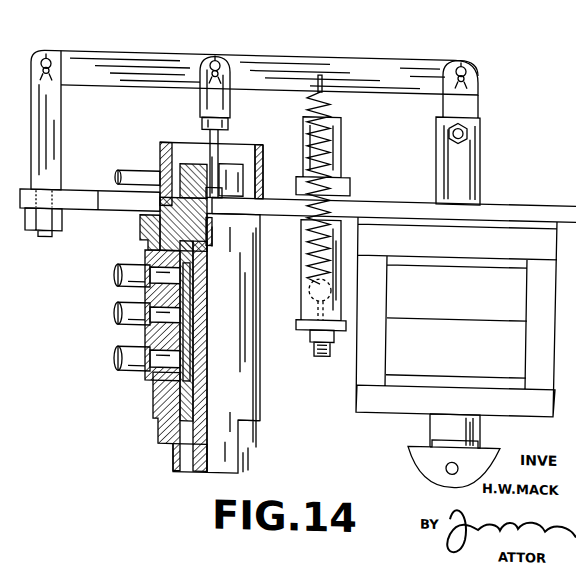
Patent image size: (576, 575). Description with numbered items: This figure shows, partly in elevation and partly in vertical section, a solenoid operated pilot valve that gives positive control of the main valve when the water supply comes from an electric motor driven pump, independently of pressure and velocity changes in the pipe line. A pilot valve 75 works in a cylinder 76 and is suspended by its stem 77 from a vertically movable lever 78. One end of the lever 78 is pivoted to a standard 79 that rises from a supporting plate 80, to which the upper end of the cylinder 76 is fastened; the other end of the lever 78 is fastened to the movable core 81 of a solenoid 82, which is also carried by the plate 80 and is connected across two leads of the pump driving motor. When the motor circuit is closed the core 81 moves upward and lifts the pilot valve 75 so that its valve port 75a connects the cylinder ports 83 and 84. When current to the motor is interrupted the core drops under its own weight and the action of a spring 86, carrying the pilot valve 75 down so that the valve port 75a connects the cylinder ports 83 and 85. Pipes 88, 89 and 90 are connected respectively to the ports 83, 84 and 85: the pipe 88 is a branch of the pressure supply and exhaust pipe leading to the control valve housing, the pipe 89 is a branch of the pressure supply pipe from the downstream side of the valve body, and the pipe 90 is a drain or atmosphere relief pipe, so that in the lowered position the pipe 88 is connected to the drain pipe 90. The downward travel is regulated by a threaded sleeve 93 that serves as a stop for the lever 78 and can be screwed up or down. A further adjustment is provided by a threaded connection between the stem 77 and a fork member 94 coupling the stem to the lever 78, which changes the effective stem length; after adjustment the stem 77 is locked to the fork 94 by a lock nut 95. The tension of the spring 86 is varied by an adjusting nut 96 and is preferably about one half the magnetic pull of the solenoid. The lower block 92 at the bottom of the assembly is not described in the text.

The pilot valve 75 is at (150, 340).
The valve port 75a is at (190, 290).
The cylinder 76 is at (240, 329).
The stem 77 is at (220, 135).
The lever 78 is at (272, 60).
The standard 79 is at (54, 120).
The supporting plate 80 is at (112, 203).
The movable core 81 is at (470, 90).
The solenoid 82 is at (456, 353).
The cylinder port 83 is at (155, 300).
The cylinder port 84 is at (148, 243).
The cylinder port 85 is at (150, 384).
The spring 86 is at (330, 96).
The pipe 88 is at (116, 315).
The pipe 89 is at (116, 276).
The drain pipe 90 is at (116, 362).
The bottom block 92 is at (172, 456).
The threaded sleeve 93 is at (342, 150).
The fork member 94 is at (200, 99).
The lock nut 95 is at (202, 124).
The adjusting nut 96 is at (316, 336).